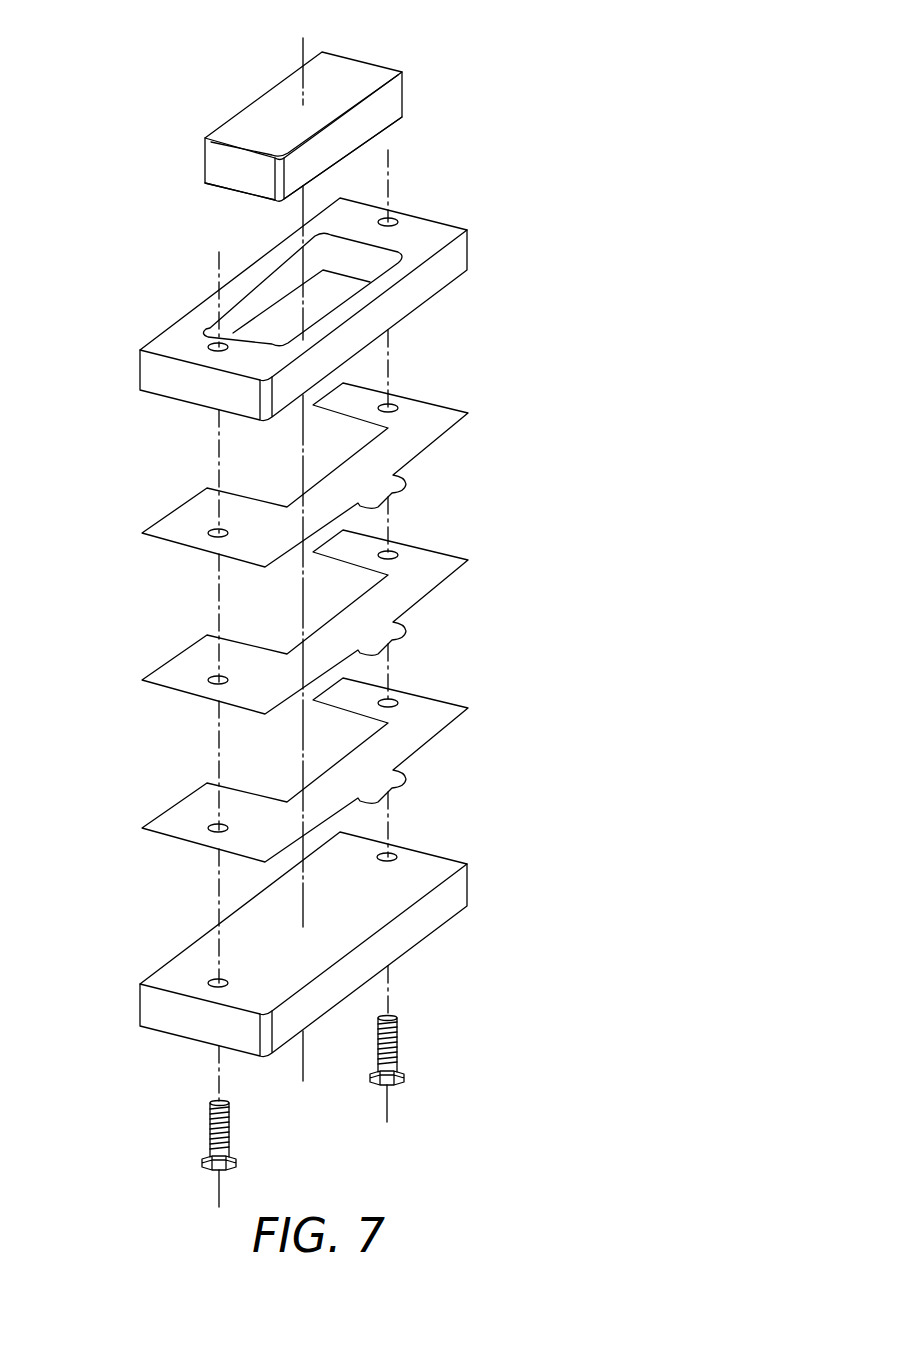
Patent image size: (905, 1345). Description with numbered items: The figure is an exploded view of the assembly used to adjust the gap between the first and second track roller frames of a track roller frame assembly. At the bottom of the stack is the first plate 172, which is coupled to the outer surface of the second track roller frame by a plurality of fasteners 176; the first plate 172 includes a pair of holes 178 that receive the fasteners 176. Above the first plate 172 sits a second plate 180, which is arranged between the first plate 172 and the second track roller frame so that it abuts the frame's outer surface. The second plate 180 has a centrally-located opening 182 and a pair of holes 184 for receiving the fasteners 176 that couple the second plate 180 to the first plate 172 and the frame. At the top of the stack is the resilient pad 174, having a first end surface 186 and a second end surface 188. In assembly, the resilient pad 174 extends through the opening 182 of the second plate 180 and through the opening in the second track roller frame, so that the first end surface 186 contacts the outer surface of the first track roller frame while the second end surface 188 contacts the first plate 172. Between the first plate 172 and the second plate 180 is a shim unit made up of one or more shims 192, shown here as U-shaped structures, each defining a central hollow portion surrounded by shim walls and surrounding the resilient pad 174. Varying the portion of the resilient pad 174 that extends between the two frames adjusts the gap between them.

The first plate 172 is at (303, 928).
The resilient pad 174 is at (310, 101).
The fasteners 176 is at (393, 1071).
The holes 178 is at (390, 854).
The second plate 180 is at (310, 304).
The opening 182 is at (278, 278).
The holes 184 is at (389, 221).
The first end surface 186 is at (368, 75).
The second end surface 188 is at (158, 187).
The shims 192 is at (434, 420).